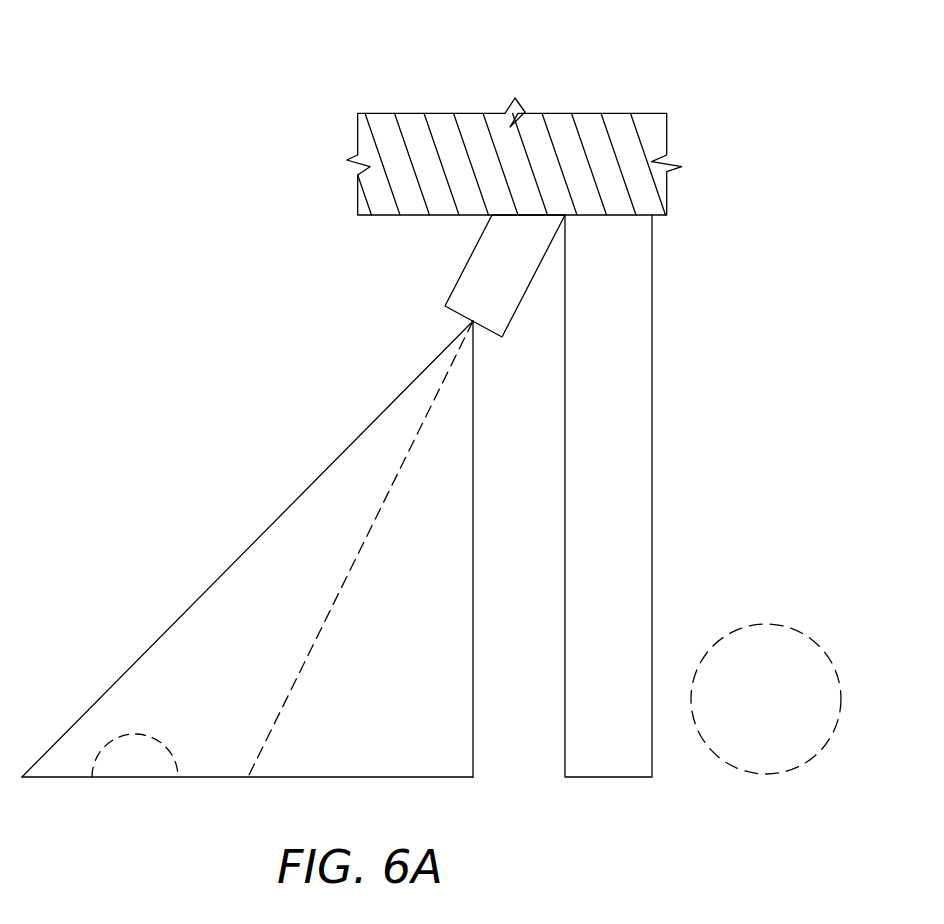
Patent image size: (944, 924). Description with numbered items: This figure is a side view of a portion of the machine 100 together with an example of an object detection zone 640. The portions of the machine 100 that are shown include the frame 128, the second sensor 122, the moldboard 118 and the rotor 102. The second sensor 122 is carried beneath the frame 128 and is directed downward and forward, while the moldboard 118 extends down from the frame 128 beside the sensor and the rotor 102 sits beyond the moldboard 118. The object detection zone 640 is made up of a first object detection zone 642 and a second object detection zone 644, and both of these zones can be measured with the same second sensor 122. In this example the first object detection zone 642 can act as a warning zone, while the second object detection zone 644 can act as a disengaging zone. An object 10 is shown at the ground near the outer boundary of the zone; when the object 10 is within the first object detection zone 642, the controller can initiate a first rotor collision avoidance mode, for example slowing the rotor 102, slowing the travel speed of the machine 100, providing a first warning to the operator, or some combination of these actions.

The machine 100 is at (662, 58).
The frame 128 is at (392, 218).
The second sensor 122 is at (475, 278).
The moldboard 118 is at (630, 489).
The object detection zone 640 is at (276, 640).
The first object detection zone 642 is at (247, 548).
The second object detection zone 644 is at (407, 778).
The object 10 is at (138, 760).
The rotor 102 is at (798, 632).